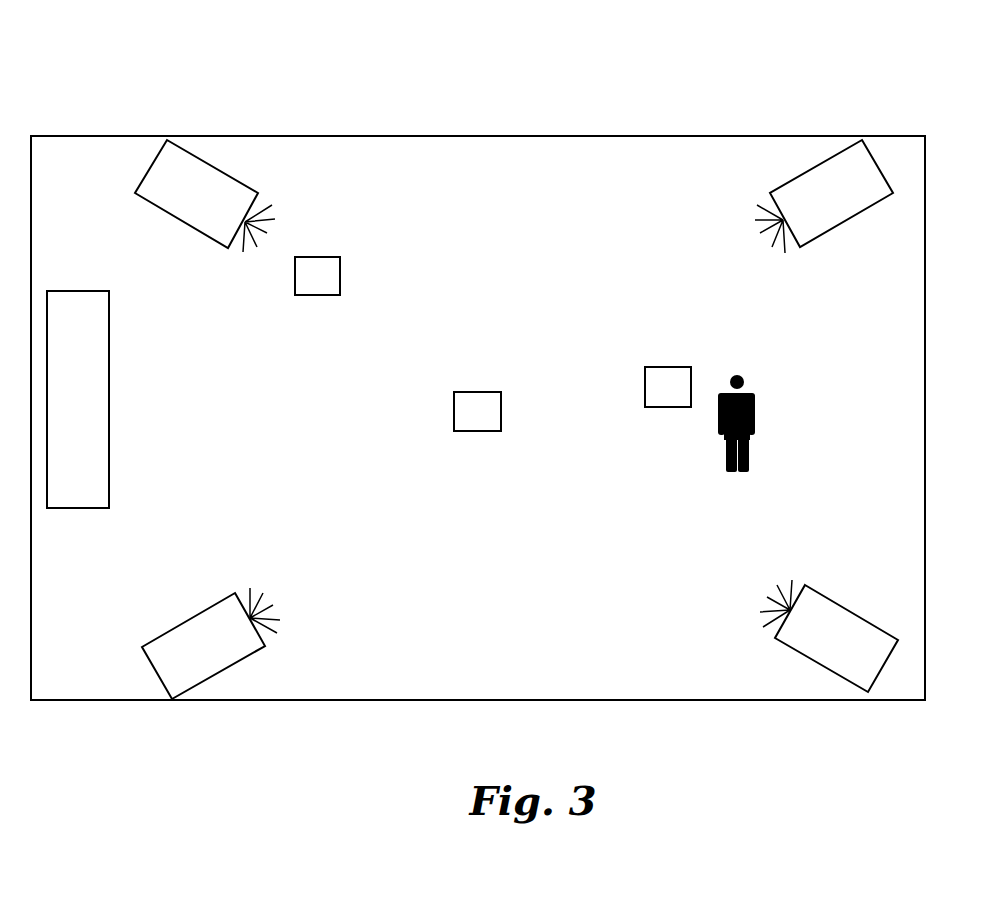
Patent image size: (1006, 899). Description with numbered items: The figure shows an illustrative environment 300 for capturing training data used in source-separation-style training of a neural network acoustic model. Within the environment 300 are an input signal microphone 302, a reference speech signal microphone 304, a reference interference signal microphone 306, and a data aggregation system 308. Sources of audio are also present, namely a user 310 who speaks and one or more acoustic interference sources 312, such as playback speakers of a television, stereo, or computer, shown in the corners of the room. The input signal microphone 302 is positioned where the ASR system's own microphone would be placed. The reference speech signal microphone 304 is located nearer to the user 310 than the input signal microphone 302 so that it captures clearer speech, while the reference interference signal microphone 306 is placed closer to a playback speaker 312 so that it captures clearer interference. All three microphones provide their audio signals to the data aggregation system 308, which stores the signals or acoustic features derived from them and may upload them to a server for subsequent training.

The environment 300 is at (938, 123).
The input signal microphone 302 is at (477, 411).
The reference speech signal microphone 304 is at (668, 387).
The reference interference signal microphone 306 is at (317, 276).
The data aggregation system 308 is at (78, 399).
The user 310 is at (731, 473).
The acoustic interference sources 312 is at (516, 419).